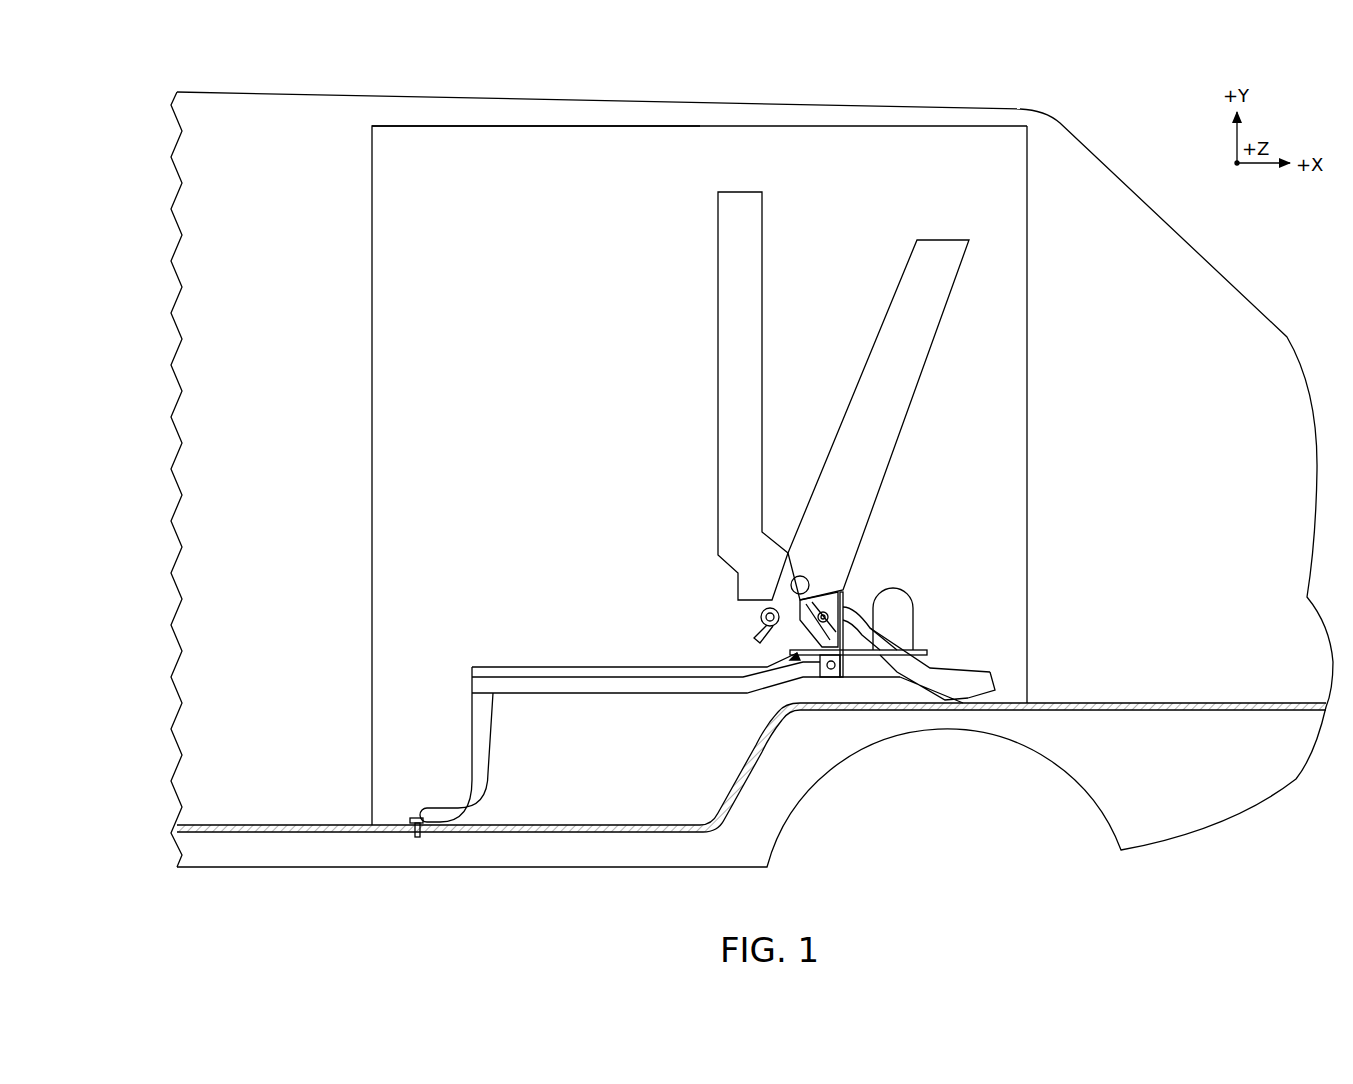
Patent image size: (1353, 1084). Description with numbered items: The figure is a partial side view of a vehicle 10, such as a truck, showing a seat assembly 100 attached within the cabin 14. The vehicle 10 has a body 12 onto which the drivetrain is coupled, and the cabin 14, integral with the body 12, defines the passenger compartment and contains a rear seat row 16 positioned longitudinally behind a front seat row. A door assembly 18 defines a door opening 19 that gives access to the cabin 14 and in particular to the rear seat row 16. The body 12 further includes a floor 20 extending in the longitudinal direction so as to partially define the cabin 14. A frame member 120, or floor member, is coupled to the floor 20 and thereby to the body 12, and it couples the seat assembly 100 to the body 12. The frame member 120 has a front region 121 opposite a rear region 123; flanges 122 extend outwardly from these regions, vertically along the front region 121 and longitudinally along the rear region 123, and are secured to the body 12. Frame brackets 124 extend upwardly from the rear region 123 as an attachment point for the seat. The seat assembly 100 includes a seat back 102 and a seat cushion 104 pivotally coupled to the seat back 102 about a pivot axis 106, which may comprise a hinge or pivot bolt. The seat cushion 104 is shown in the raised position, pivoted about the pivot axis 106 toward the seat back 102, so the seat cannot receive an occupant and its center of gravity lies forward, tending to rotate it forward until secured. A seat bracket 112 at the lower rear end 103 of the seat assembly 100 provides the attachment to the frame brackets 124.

The vehicle 10 is at (138, 172).
The body 12 is at (345, 92).
The cabin 14 is at (265, 570).
The seat row 16 is at (988, 348).
The door assembly 18 is at (366, 272).
The door opening 19 is at (400, 430).
The floor 20 is at (547, 832).
The seat assembly 100 is at (758, 396).
The seat back 102 is at (913, 262).
The lower rear end 103 is at (879, 580).
The seat cushion 104 is at (718, 238).
The pivot axis 106 is at (803, 577).
The seat bracket 112 is at (846, 650).
The frame member 120 is at (614, 695).
The front region 121 is at (424, 736).
The flange 122 is at (412, 860).
The rear region 123 is at (950, 652).
The frame bracket 124 is at (856, 616).